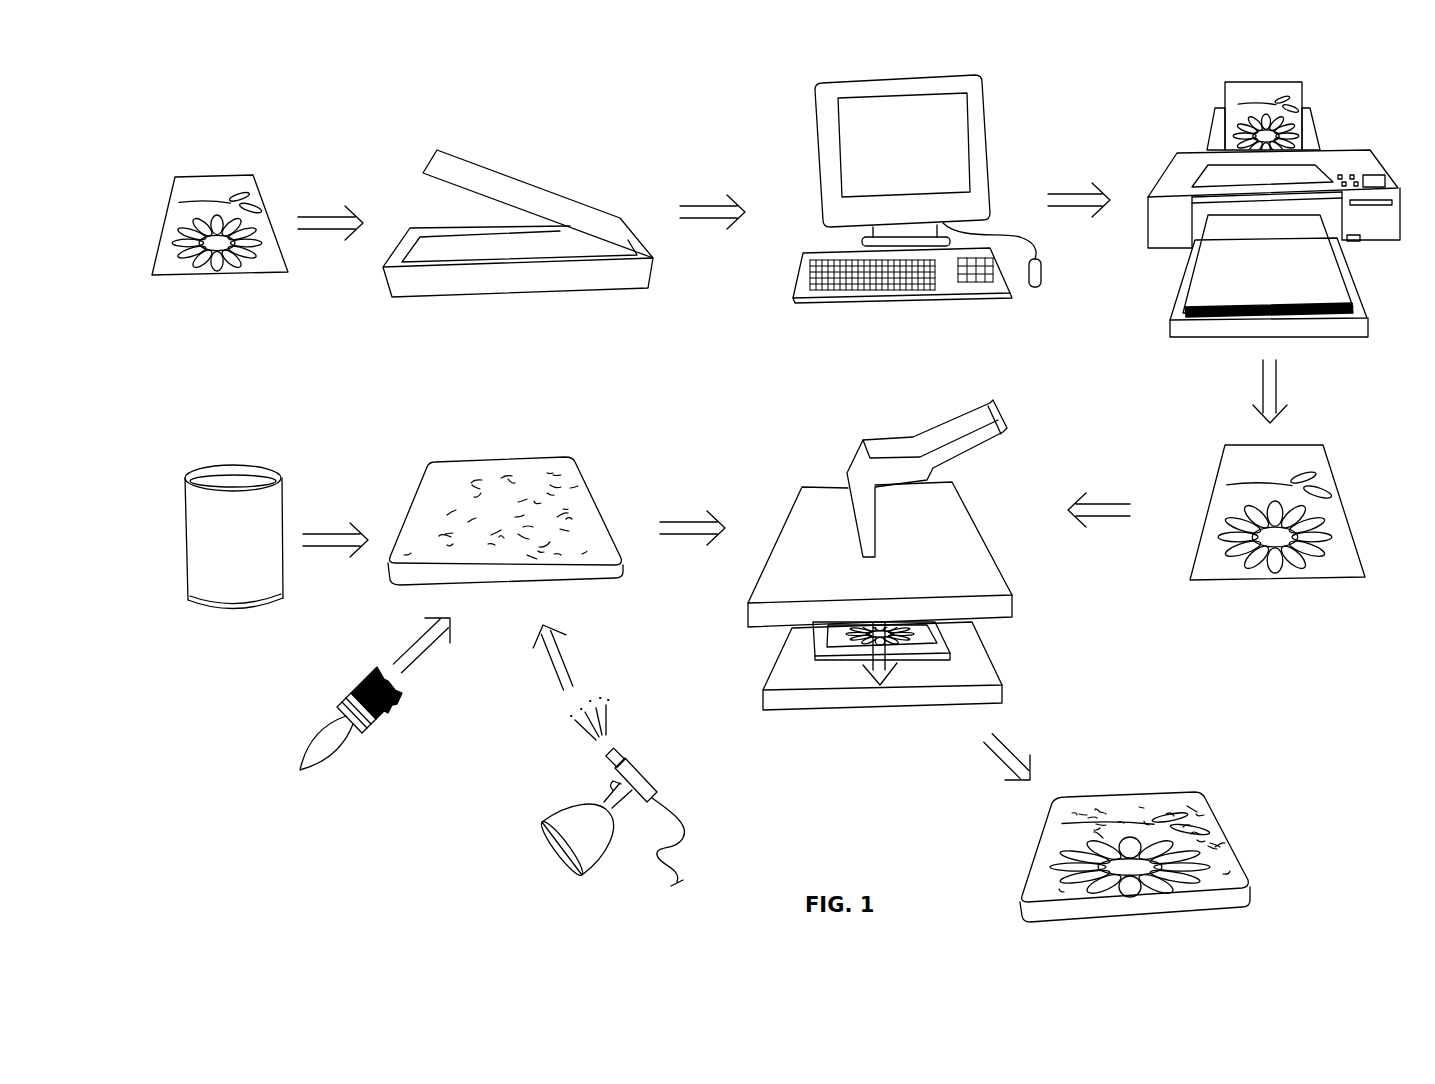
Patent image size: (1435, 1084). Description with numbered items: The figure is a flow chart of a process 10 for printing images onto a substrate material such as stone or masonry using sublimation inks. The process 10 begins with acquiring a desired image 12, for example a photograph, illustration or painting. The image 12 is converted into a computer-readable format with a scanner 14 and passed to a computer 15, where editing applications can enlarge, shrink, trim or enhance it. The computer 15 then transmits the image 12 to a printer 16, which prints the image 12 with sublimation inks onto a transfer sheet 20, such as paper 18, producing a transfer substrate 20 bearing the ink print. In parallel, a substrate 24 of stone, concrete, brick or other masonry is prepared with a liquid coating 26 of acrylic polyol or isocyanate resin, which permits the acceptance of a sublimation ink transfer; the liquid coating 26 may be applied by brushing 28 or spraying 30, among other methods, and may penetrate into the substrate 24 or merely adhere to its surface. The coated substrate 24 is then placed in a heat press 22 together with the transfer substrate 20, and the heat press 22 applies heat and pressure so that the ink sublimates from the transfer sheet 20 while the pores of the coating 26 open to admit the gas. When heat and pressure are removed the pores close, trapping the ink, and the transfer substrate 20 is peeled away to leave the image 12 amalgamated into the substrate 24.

The process 10 is at (195, 147).
The image 12 is at (221, 298).
The scanner 14 is at (446, 280).
The computer 15 is at (885, 152).
The printer 16 is at (1263, 312).
The paper 18 is at (1257, 282).
The transfer substrate 20 is at (1258, 92).
The heat press 22 is at (937, 579).
The substrate 24 is at (492, 465).
The liquid coating 26 is at (219, 557).
The brushing 28 is at (350, 728).
The spraying 30 is at (590, 853).